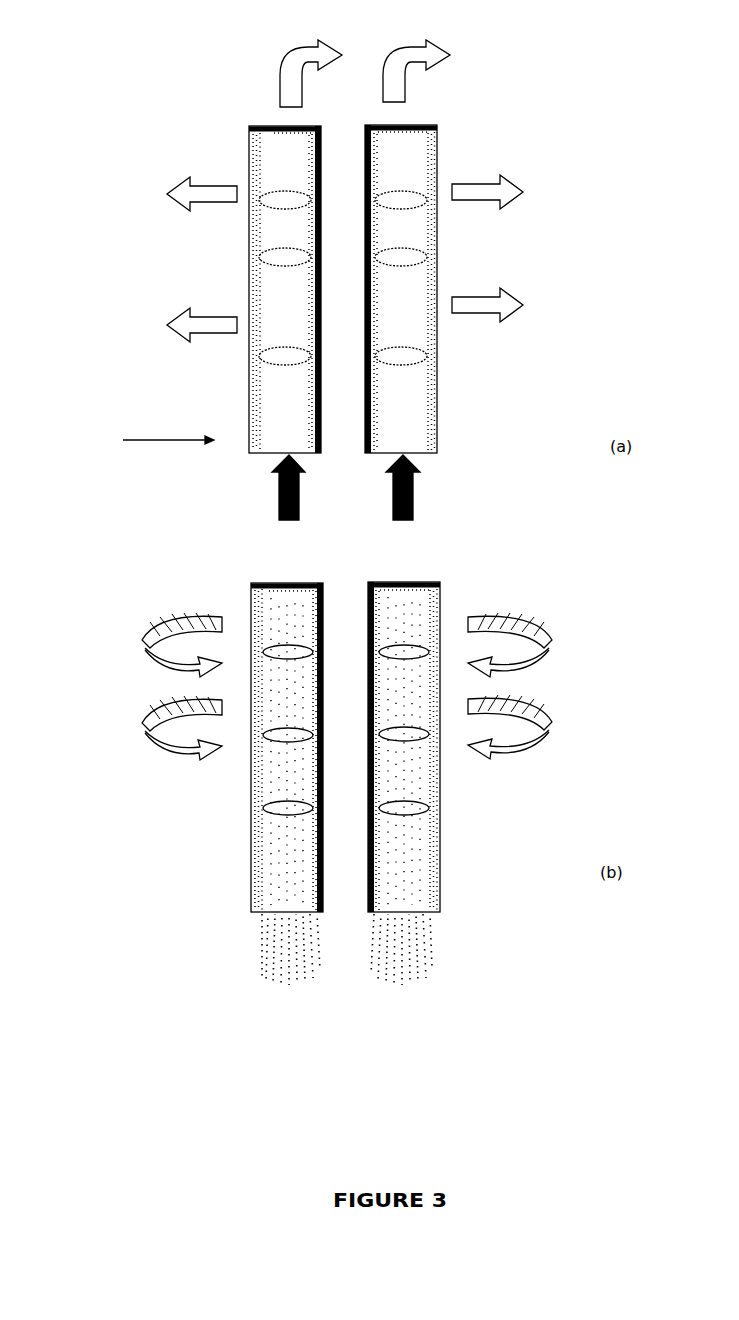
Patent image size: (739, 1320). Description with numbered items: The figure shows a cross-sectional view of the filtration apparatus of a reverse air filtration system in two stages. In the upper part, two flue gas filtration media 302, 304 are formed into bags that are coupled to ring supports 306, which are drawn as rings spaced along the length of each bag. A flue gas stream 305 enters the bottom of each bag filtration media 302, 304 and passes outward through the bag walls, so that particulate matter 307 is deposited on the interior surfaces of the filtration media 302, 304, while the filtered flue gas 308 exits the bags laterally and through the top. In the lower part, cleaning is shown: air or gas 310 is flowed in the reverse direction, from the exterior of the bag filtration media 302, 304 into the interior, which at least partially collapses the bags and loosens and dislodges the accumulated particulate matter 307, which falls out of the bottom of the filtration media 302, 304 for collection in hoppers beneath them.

The flue gas filtration media 302 is at (182, 789).
The flue gas filtration media 304 is at (450, 403).
The flue gas stream 305 is at (345, 487).
The ring supports 306 is at (250, 283).
The particulate matter 307 is at (268, 123).
The filtered flue gas 308 is at (341, 188).
The air or gas 310 is at (353, 686).